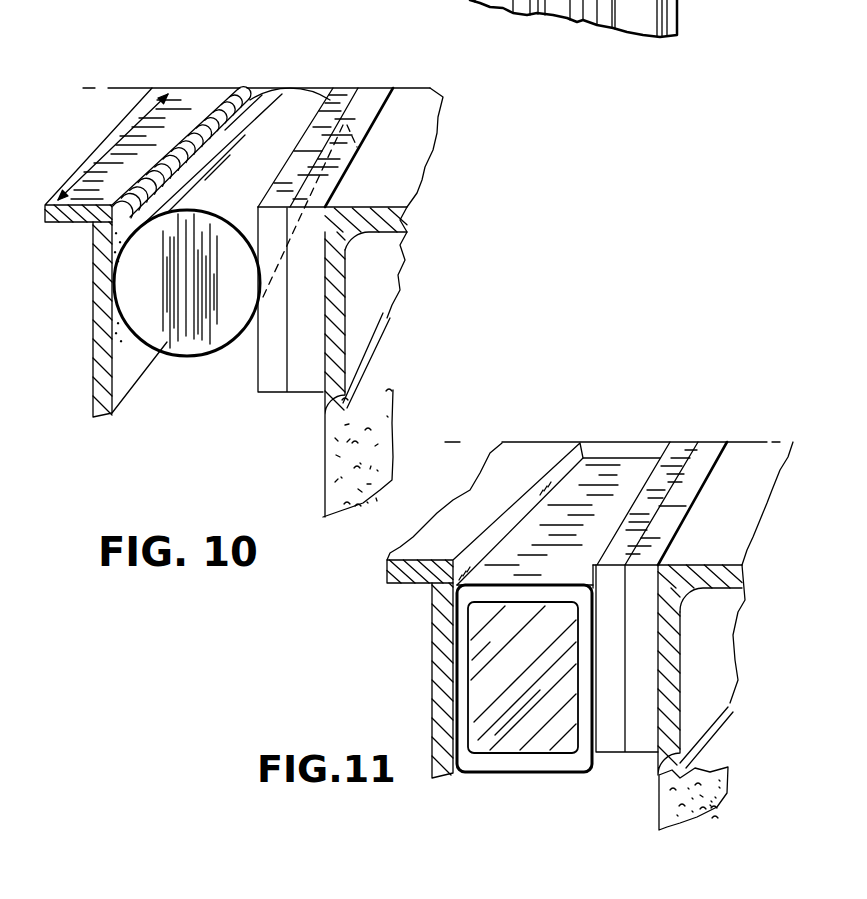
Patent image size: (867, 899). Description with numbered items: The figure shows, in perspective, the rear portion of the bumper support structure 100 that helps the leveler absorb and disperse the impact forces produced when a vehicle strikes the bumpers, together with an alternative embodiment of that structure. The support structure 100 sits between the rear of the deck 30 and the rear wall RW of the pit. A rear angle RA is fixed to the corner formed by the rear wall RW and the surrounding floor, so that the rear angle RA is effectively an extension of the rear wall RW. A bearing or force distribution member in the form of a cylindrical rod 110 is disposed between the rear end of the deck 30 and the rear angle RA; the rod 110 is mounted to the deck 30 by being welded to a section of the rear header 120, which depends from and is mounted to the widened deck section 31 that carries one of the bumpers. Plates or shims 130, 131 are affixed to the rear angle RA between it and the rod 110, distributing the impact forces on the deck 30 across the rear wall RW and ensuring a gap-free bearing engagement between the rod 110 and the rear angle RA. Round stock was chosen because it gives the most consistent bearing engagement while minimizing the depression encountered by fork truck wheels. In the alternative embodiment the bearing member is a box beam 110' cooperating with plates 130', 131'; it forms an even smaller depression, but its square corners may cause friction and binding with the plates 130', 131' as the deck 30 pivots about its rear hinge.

In FIG. 10, the deck 30 is at (192, 88).
In FIG. 10, the widened deck section 31 is at (113, 148).
In FIG. 10, the bumper support structure 100 is at (276, 85).
In FIG. 10, the cylindrical rod 110 is at (187, 313).
In FIG. 10, the rear header 120 is at (103, 327).
In FIG. 10, the plate 130 is at (397, 153).
In FIG. 10, the plate 131 is at (294, 270).
In FIG. 10, the rear angle RA is at (393, 188).
In FIG. 11, the rear angle RA is at (683, 655).
In FIG. 10, the rear wall RW is at (323, 453).
In FIG. 11, the rear wall RW is at (659, 802).
In FIG. 11, the box beam 110' is at (558, 564).
In FIG. 11, the plate 131' is at (667, 561).
In FIG. 11, the plate 130' is at (729, 472).